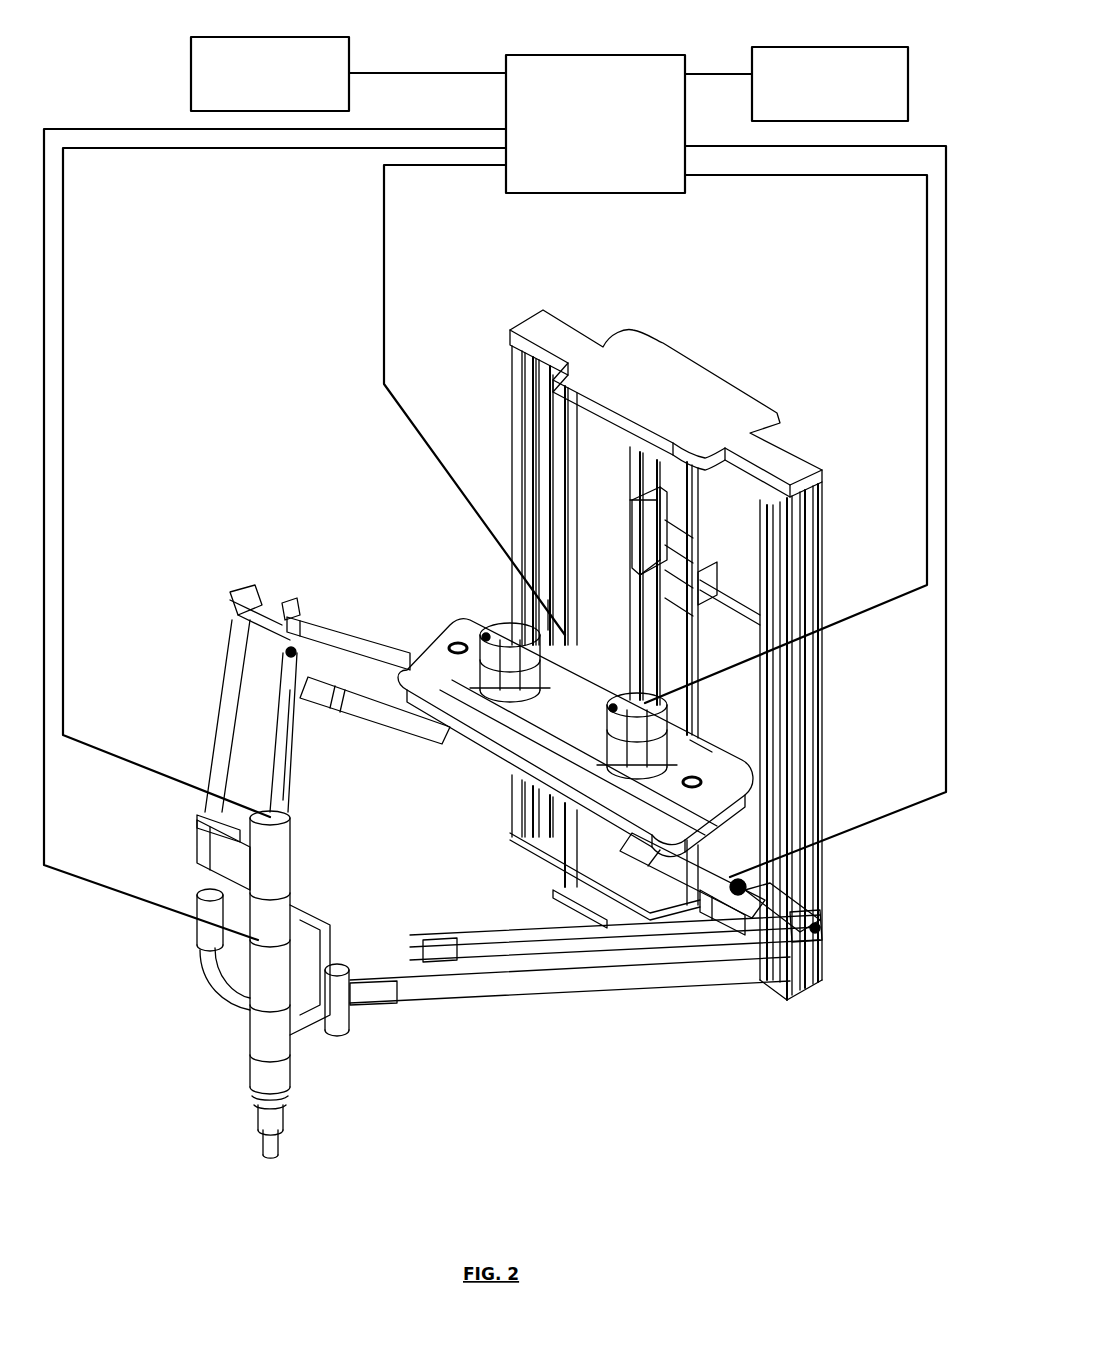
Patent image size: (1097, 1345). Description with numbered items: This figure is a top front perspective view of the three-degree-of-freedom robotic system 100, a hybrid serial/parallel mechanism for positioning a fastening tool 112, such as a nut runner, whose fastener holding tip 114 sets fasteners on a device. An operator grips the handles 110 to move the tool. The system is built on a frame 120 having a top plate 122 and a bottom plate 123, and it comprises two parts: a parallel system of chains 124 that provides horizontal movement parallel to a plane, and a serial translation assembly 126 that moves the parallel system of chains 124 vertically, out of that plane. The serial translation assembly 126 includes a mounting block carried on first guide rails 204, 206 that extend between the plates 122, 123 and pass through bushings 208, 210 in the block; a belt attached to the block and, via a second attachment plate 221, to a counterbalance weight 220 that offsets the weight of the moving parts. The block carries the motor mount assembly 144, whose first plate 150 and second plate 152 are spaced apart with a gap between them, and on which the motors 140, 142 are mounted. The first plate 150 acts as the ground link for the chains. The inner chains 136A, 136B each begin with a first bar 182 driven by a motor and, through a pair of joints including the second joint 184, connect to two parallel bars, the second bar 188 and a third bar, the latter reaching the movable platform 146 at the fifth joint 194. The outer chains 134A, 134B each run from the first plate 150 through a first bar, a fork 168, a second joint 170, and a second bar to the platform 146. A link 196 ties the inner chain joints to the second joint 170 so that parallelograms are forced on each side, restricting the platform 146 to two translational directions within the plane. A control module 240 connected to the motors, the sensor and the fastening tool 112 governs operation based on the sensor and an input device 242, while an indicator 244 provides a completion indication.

The 3-DOF robotic system 100 is at (318, 374).
The handles 110 is at (210, 928).
The fastening tool 112 is at (267, 1065).
The fastener holding tip 114 is at (263, 1152).
The frame 120 is at (687, 655).
The top plate 122 is at (726, 428).
The bottom plate 123 is at (558, 890).
The parallel system of chains 124 is at (269, 694).
The serial translation assembly 126 is at (706, 655).
The outer chain 134A is at (295, 632).
The outer chain 134B is at (684, 959).
The inner chain 136A is at (264, 731).
The inner chain 136B is at (611, 974).
The motor 140 is at (503, 627).
The motor 142 is at (668, 718).
The motor mount assembly 144 is at (688, 748).
The movable platform 146 is at (228, 860).
The first plate 150 is at (573, 728).
The second plate 152 is at (507, 780).
The fork 168 is at (287, 605).
The second joint 170 is at (822, 927).
The first bar 182 is at (385, 730).
The second joint 184 is at (737, 920).
The second bar 188 is at (280, 728).
The fifth joint 194 is at (383, 1005).
The link 196 is at (265, 640).
The first guide rail 204 is at (570, 462).
The first guide rail 206 is at (712, 640).
The bushing 208 is at (562, 638).
The bushing 210 is at (720, 717).
The counterbalance weight 220 is at (742, 628).
The second attachment plate 221 is at (707, 592).
The control module 240 is at (567, 54).
The input device 242 is at (779, 45).
The indicator 244 is at (214, 36).